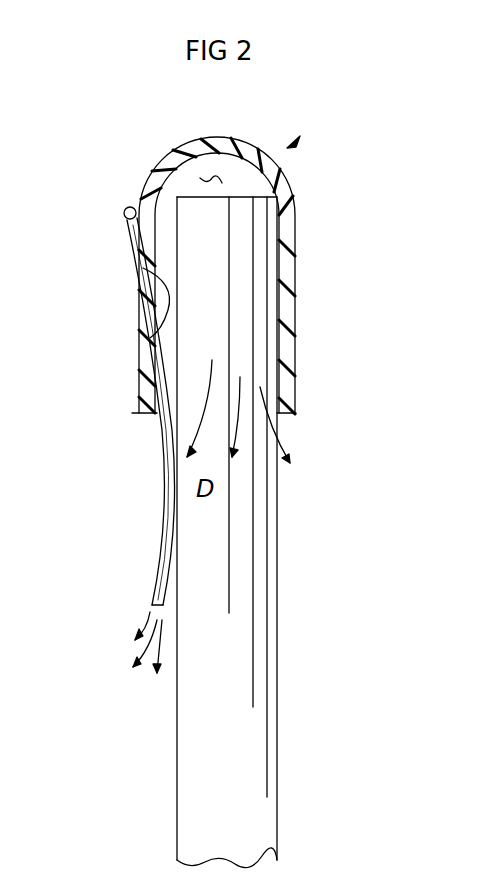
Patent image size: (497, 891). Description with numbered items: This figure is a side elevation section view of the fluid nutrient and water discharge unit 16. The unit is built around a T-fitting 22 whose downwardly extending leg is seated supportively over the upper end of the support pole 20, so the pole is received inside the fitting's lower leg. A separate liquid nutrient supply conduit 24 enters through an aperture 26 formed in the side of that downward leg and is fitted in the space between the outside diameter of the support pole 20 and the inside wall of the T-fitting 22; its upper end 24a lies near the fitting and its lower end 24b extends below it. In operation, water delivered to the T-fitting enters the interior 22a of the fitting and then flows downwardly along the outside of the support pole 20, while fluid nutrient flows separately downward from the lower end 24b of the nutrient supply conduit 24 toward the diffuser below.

The fluid nutrient and water discharge unit 16 is at (290, 146).
The support pole 20 is at (178, 792).
The T-fitting 22 is at (193, 140).
The interior of the T-fitting 22a is at (217, 176).
The liquid nutrient supply conduit 24 is at (131, 207).
The tube inlet end 24a is at (124, 213).
The lower end of the nutrient supply conduit 24b is at (150, 563).
The aperture 26 is at (152, 290).